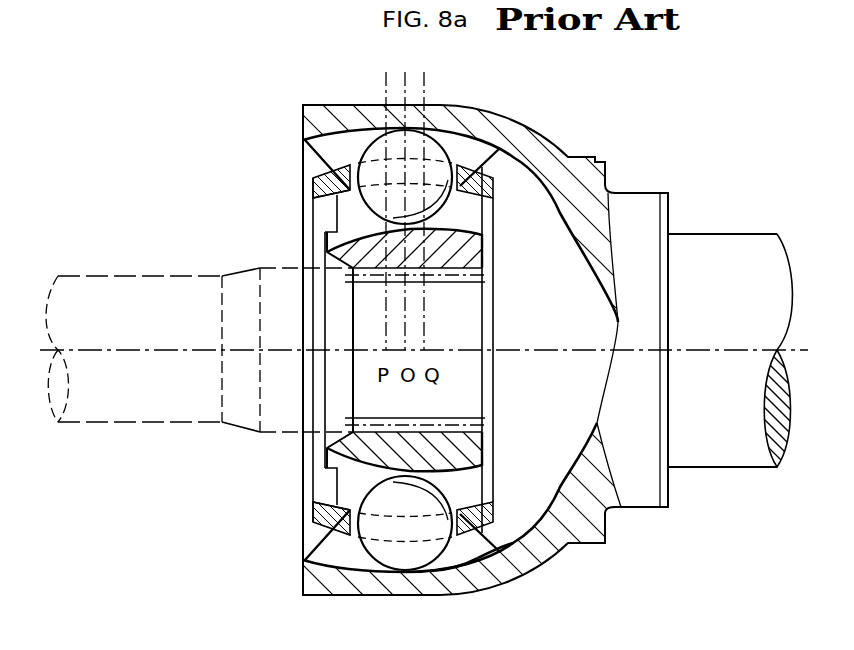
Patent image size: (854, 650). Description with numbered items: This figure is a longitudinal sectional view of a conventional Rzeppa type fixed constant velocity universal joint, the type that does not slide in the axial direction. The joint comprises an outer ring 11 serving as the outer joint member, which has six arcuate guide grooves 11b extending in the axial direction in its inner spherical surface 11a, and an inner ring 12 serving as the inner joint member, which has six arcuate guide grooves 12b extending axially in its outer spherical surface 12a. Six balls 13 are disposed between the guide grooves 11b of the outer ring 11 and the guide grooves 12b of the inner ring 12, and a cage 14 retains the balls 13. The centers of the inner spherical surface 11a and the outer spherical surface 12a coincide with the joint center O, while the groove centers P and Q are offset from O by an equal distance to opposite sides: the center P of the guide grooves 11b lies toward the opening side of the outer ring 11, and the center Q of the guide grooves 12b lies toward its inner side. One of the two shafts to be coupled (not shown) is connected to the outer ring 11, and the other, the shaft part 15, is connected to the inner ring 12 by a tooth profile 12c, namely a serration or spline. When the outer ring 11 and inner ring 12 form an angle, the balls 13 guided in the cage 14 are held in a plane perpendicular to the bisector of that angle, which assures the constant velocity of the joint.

The outer ring 11 is at (302, 110).
The inner spherical surface 11a is at (469, 525).
The guide grooves 11b is at (455, 553).
The inner ring 12 is at (408, 419).
The outer spherical surface 12a is at (344, 512).
The guide grooves 12b is at (482, 228).
The tooth profile 12c is at (448, 283).
The balls 13 is at (356, 156).
The cage 14 is at (483, 167).
The shaft part 15 is at (138, 277).